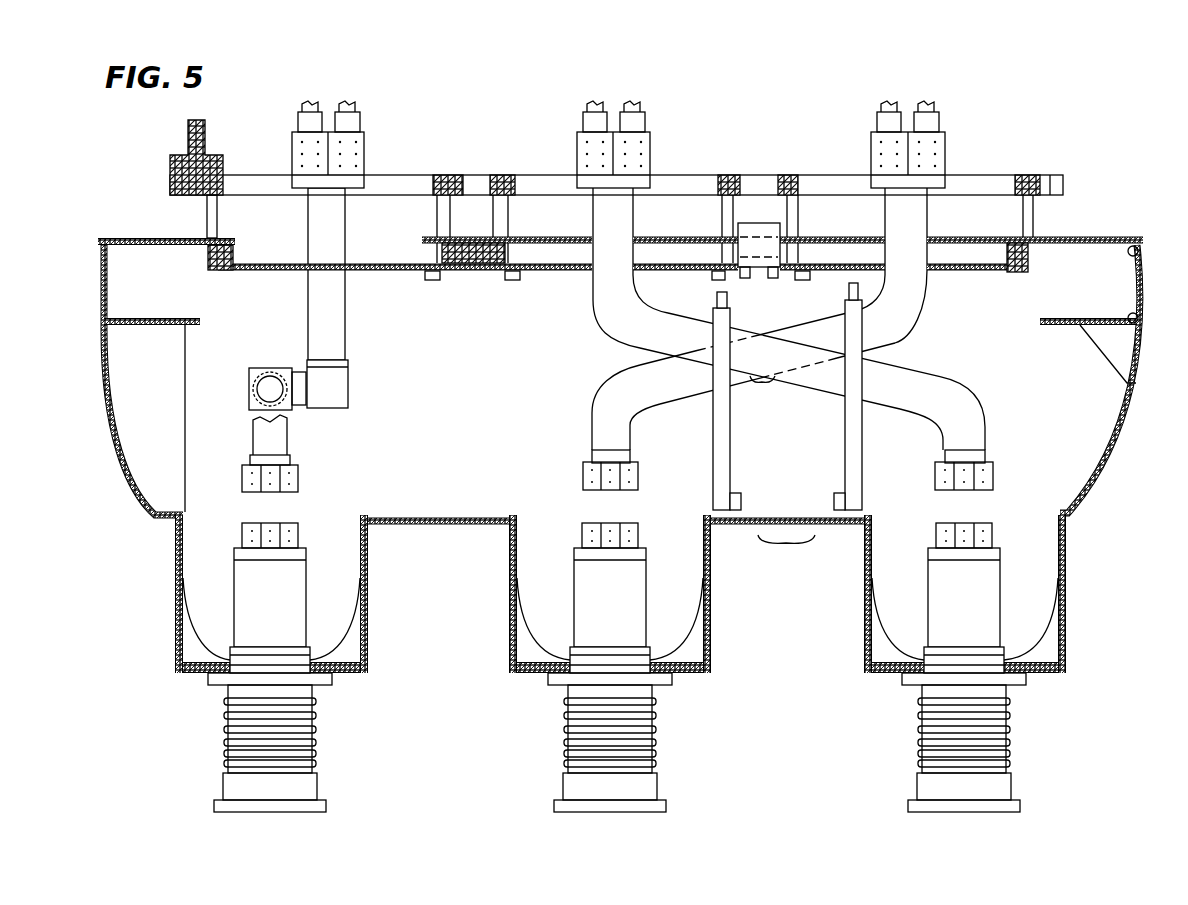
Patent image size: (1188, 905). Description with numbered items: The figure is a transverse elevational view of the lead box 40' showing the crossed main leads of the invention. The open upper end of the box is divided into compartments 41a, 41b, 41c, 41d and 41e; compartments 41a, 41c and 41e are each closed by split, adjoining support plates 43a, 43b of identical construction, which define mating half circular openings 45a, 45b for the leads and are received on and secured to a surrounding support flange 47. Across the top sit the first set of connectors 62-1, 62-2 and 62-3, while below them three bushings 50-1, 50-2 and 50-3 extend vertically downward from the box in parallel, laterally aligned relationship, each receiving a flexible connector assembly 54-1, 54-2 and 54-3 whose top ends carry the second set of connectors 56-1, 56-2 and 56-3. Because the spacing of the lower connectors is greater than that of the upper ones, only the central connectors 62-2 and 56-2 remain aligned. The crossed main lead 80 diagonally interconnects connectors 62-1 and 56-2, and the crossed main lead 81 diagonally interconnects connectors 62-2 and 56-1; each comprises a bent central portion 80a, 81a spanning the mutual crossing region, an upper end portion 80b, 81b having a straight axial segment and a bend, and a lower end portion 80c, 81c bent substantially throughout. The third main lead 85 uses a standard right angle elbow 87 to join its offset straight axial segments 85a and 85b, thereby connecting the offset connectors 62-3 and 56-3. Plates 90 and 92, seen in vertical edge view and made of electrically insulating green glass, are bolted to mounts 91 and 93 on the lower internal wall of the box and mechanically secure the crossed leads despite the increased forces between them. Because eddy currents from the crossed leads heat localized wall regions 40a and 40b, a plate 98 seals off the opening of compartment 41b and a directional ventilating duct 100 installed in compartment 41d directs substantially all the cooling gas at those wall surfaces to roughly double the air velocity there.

The lead box 40' is at (627, 382).
The localized wall region 40a is at (768, 395).
The localized wall region 40b is at (788, 542).
The compartment 41a is at (218, 182).
The compartment 41b is at (448, 175).
The compartment 41c is at (510, 175).
The compartment 41d is at (780, 175).
The compartment 41e is at (1030, 175).
The support plate 43a is at (258, 263).
The support plate 43b is at (360, 272).
The half circular opening 45a is at (585, 240).
The half circular opening 45b is at (640, 240).
The support flange 47 is at (230, 270).
The bushing 50-1 is at (1066, 588).
The bushing 50-2 is at (712, 588).
The bushing 50-3 is at (368, 585).
The flexible connector assembly 54-1 is at (1010, 724).
The flexible connector assembly 54-2 is at (656, 724).
The flexible connector assembly 54-3 is at (316, 724).
The connector 56-1 is at (994, 540).
The connector 56-2 is at (638, 540).
The connector 56-3 is at (298, 540).
The connector 62-1 is at (950, 156).
The connector 62-2 is at (655, 158).
The connector 62-3 is at (358, 142).
The crossed main lead 80 is at (761, 339).
The central portion 80a is at (808, 322).
The upper end portion 80b is at (928, 285).
The lower end portion 80c is at (592, 405).
The crossed main lead 81 is at (787, 339).
The central portion 81a is at (845, 398).
The upper end portion 81b is at (600, 312).
The lower end portion 81c is at (985, 410).
The main lead 85 is at (321, 412).
The straight axial segment 85a is at (349, 345).
The straight axial segment 85b is at (290, 445).
The right angle offset, or elbow 87 is at (276, 368).
The plate 90 is at (714, 464).
The mount 91 is at (742, 503).
The plate 92 is at (865, 476).
The mount 93 is at (834, 500).
The plate 98 is at (470, 262).
The directional ventilating duct 100 is at (738, 225).